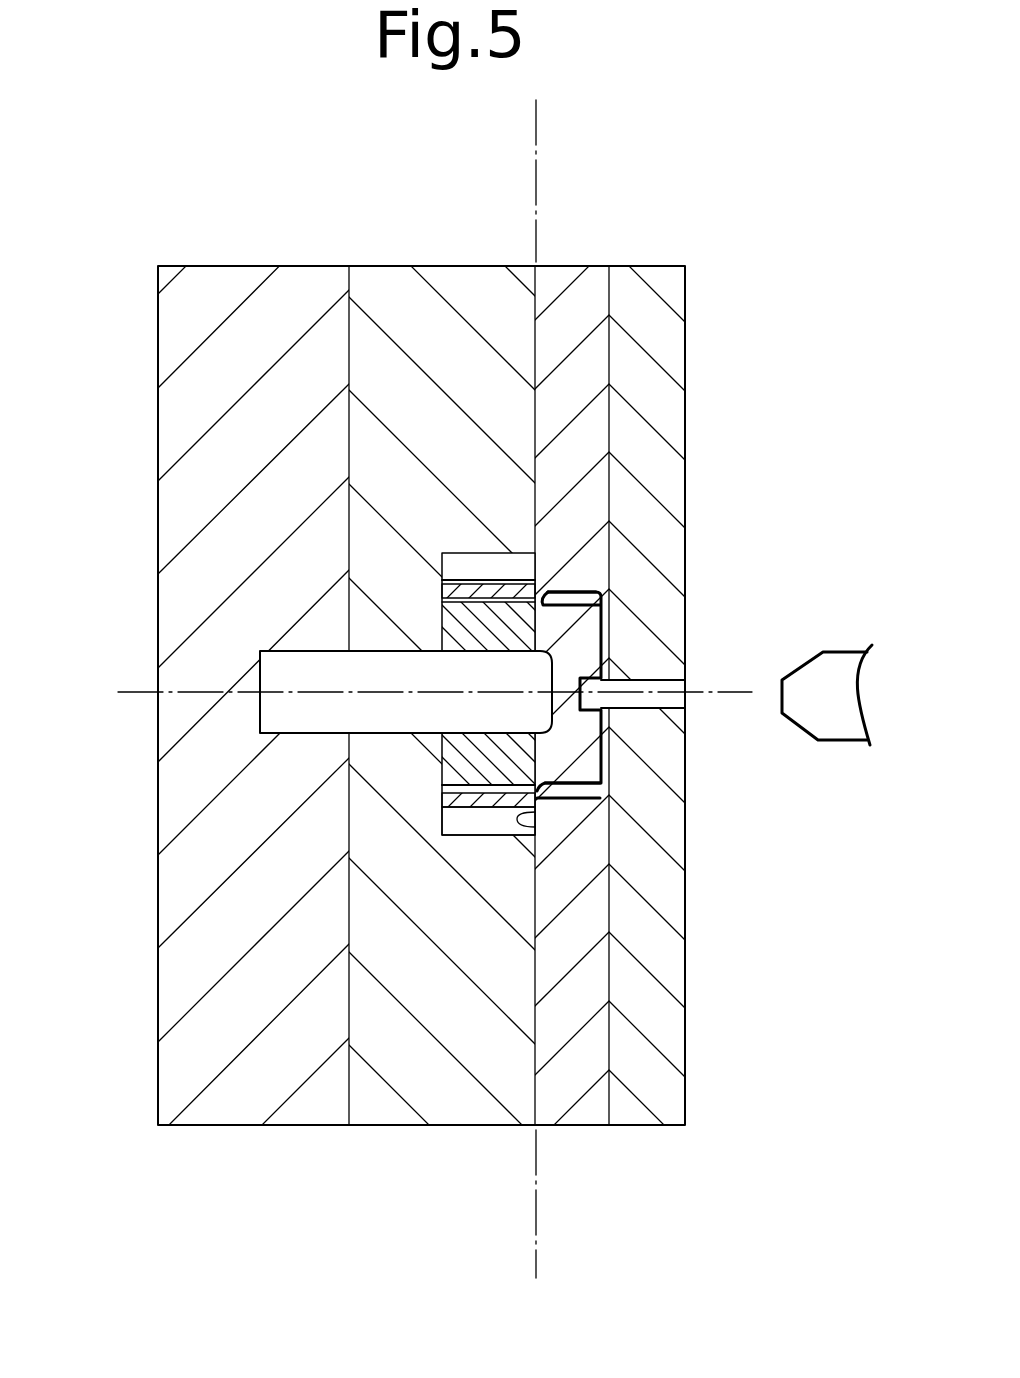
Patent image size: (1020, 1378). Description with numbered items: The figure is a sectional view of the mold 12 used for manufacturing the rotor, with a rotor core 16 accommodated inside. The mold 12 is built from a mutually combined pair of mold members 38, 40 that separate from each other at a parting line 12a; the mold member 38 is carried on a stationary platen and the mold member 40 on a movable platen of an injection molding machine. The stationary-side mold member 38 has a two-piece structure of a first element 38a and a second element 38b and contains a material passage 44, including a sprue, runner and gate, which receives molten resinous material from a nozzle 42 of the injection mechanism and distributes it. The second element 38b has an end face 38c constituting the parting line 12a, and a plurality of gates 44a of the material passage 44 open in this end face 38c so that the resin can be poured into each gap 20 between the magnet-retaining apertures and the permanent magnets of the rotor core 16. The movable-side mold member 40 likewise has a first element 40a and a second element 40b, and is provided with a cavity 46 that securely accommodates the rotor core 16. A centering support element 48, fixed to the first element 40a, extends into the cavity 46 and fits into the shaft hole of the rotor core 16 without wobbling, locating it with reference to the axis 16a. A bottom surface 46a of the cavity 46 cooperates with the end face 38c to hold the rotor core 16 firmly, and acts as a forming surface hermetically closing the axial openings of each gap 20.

The mold 12 is at (262, 198).
The parting line 12a is at (540, 137).
The rotor core 16 is at (488, 558).
The axis 16a is at (132, 694).
The gap 20 is at (502, 792).
The mold member 38 is at (618, 755).
The first element 38a is at (637, 1110).
The second element 38b is at (585, 1110).
The end face 38c is at (535, 829).
The mold member 40 is at (346, 684).
The first element 40a is at (257, 1100).
The second element 40b is at (382, 1100).
The nozzle 42 is at (845, 722).
The material passage 44 is at (658, 687).
The gates 44a is at (545, 598).
The cavity 46 is at (500, 689).
The bottom surface 46a is at (441, 817).
The centering support element 48 is at (273, 717).